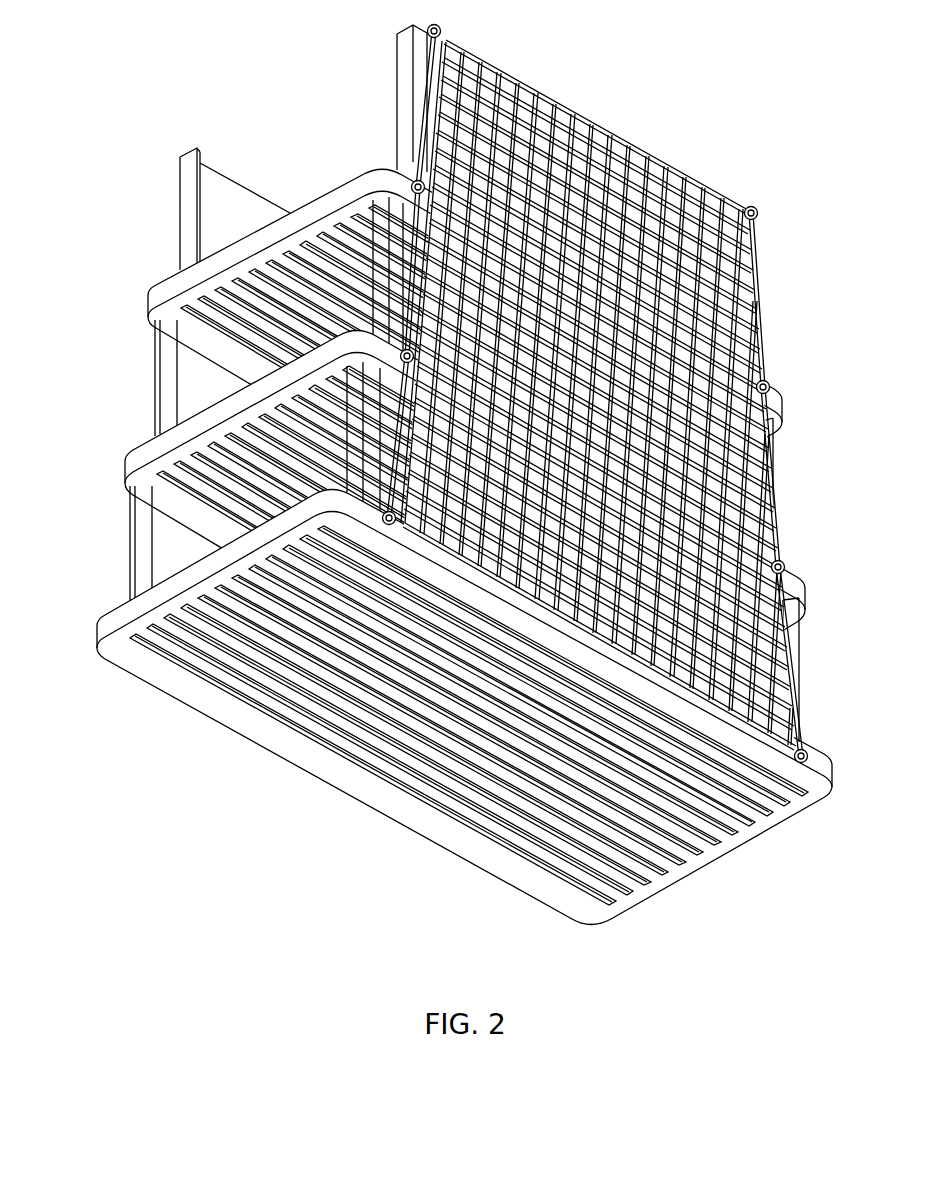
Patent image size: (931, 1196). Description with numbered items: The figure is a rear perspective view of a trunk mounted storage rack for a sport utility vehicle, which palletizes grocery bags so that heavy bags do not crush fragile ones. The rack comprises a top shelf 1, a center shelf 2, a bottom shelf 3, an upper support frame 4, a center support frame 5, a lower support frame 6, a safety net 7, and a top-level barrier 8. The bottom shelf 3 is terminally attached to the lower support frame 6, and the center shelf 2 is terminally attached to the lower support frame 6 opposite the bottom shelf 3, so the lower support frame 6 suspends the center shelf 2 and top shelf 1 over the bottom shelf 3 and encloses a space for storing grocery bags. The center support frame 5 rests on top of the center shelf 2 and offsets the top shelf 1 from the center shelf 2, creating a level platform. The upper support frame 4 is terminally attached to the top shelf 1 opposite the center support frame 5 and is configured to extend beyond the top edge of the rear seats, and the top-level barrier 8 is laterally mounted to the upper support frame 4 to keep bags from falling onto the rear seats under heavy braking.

The top shelf 1 is at (148, 314).
The center shelf 2 is at (125, 478).
The bottom shelf 3 is at (100, 640).
The upper support frame 4 is at (397, 108).
The center support frame 5 is at (768, 451).
The lower support frame 6 is at (790, 657).
The safety net 7 is at (618, 143).
The top-level barrier 8 is at (285, 206).